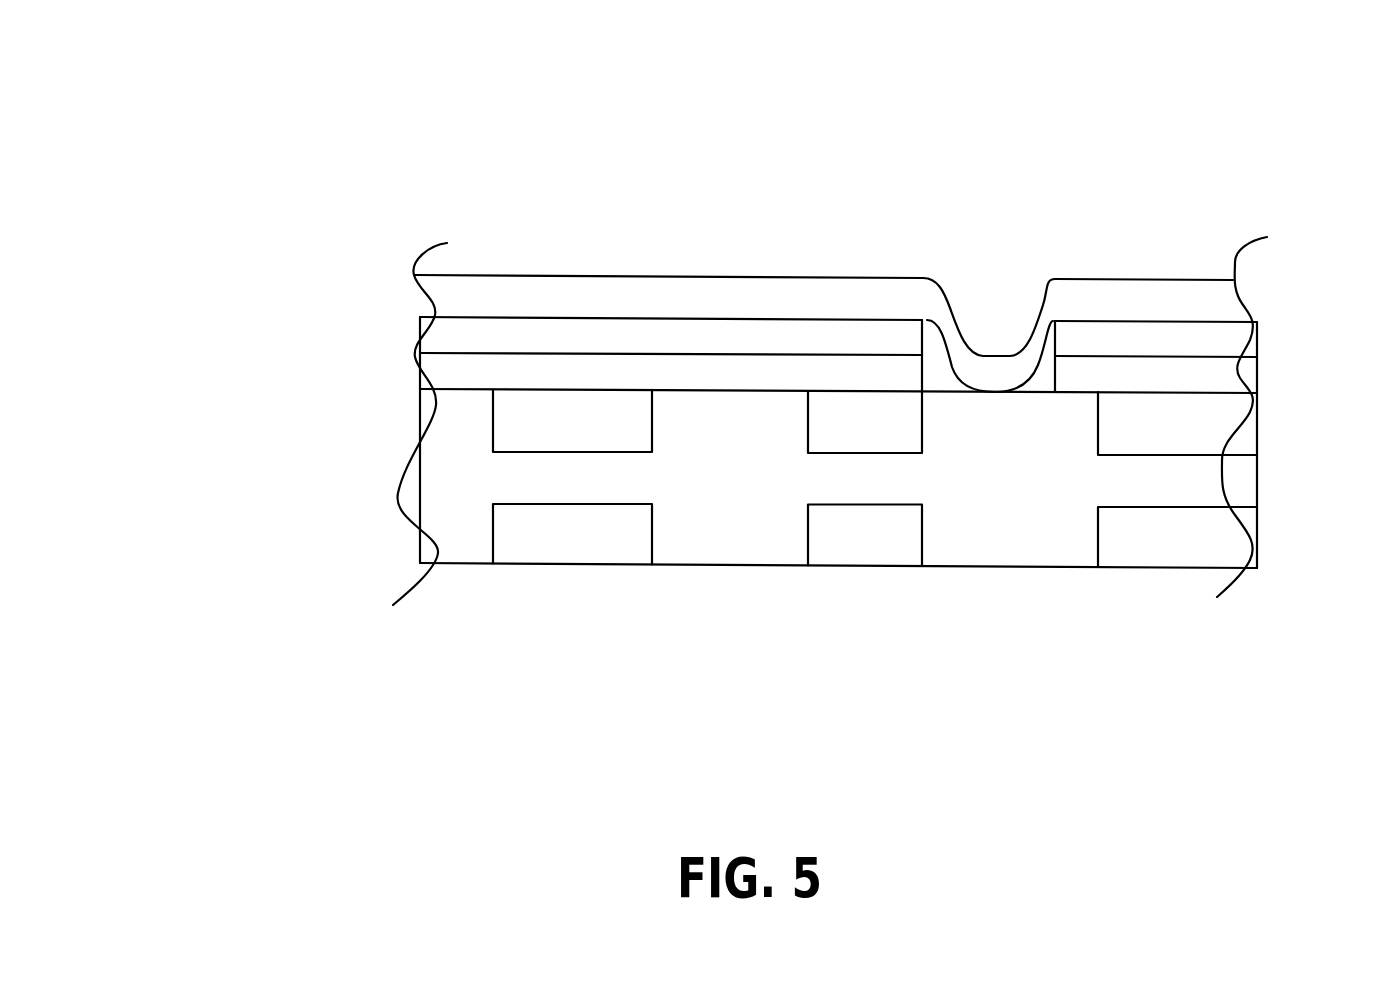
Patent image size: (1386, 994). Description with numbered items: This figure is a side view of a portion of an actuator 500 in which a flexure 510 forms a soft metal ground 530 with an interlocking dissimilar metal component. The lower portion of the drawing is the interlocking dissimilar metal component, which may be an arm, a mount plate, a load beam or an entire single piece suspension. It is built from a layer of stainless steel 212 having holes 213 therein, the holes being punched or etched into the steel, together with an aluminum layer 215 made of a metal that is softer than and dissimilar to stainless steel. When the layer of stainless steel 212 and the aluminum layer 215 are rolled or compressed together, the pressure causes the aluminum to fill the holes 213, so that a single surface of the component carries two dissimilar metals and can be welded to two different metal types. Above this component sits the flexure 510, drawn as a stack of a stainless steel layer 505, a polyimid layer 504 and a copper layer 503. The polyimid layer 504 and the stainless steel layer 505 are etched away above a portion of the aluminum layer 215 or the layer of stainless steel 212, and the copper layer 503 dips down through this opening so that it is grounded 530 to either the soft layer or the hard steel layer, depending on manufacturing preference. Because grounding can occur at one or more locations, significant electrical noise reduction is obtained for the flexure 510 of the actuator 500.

The actuator 500 is at (862, 79).
The flexure 510 is at (248, 233).
The copper layer 503 is at (415, 302).
The polyimid layer 504 is at (450, 338).
The stainless steel layer 505 is at (450, 374).
The soft metal ground 530 is at (1055, 260).
The layer of stainless steel 212 is at (1207, 421).
The holes 213 is at (1015, 533).
The aluminum layer 215 is at (1235, 487).